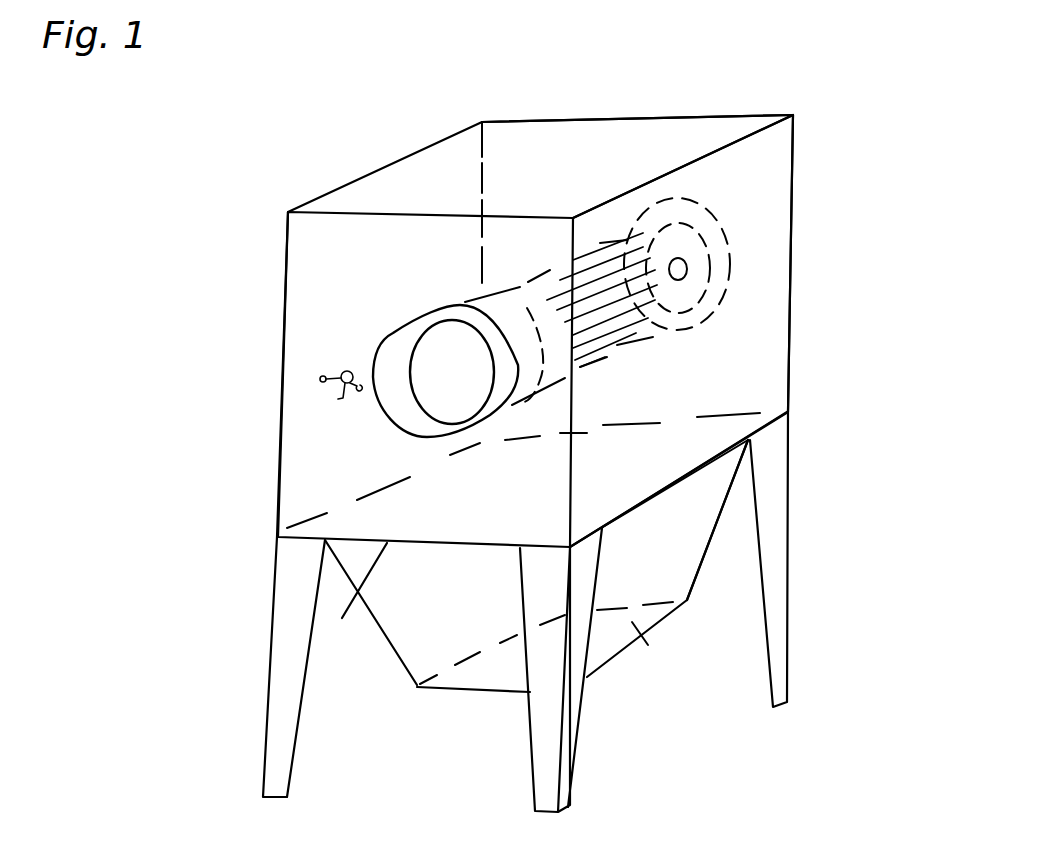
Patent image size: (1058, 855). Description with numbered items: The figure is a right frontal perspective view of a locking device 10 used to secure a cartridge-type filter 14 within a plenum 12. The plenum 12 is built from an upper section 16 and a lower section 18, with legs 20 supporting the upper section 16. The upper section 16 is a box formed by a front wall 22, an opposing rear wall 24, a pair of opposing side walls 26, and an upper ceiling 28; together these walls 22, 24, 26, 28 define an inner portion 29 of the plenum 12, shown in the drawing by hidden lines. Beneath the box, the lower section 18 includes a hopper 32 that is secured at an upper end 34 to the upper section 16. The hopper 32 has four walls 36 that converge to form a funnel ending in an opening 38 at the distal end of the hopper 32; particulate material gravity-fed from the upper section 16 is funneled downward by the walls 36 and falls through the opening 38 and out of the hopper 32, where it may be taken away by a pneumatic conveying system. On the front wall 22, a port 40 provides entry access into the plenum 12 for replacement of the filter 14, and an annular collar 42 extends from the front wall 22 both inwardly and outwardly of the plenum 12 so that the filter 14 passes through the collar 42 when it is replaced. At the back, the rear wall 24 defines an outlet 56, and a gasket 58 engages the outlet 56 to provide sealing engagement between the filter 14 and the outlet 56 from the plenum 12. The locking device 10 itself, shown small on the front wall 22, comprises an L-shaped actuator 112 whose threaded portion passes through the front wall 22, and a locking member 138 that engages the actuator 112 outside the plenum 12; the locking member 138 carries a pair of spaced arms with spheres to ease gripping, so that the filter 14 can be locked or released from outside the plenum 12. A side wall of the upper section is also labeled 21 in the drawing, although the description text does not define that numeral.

The locking device 10 is at (866, 198).
The plenum 12 is at (767, 380).
The cartridge-type filter 14 is at (653, 337).
The upper section 16 is at (772, 160).
The lower section 18 is at (668, 592).
The legs 20 is at (277, 747).
The side wall 21 is at (313, 267).
The front wall 22 is at (303, 500).
The rear wall 24 is at (648, 127).
The side walls 26 is at (657, 450).
The upper ceiling 28 is at (728, 128).
The inner portion 29 is at (527, 177).
The hopper 32 is at (432, 653).
The upper end 34 is at (368, 612).
The walls 36 is at (473, 675).
The opening 38 is at (515, 695).
The port 40 is at (438, 395).
The annular collar 42 is at (397, 347).
The outlet 56 is at (680, 270).
The gasket 58 is at (713, 248).
The L-shaped actuator 112 is at (337, 398).
The locking member 138 is at (344, 372).